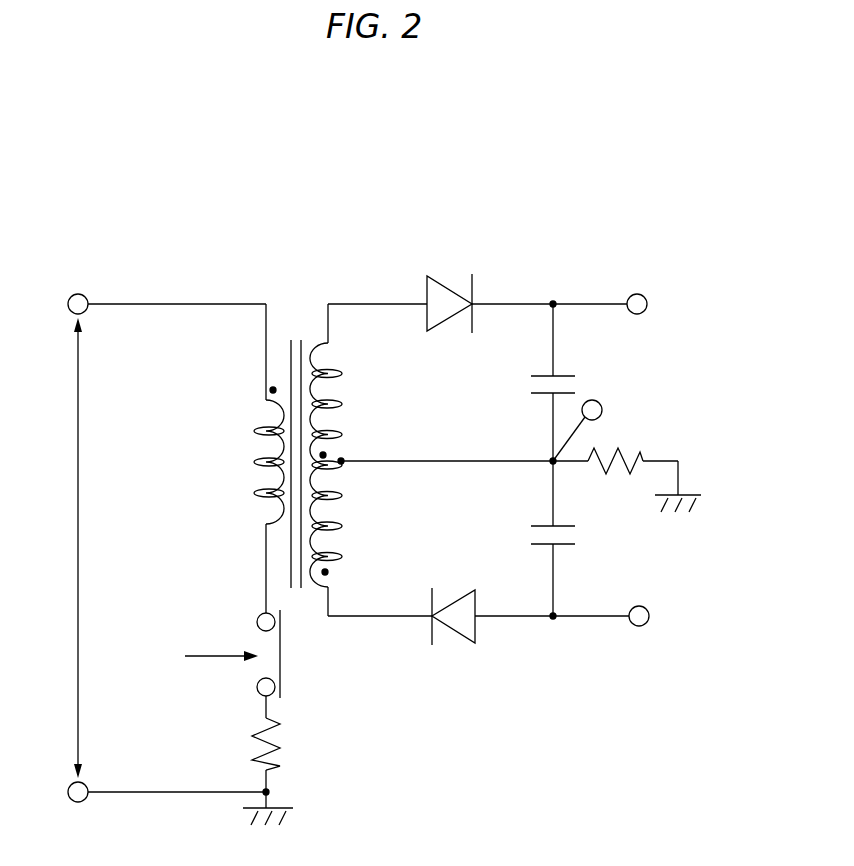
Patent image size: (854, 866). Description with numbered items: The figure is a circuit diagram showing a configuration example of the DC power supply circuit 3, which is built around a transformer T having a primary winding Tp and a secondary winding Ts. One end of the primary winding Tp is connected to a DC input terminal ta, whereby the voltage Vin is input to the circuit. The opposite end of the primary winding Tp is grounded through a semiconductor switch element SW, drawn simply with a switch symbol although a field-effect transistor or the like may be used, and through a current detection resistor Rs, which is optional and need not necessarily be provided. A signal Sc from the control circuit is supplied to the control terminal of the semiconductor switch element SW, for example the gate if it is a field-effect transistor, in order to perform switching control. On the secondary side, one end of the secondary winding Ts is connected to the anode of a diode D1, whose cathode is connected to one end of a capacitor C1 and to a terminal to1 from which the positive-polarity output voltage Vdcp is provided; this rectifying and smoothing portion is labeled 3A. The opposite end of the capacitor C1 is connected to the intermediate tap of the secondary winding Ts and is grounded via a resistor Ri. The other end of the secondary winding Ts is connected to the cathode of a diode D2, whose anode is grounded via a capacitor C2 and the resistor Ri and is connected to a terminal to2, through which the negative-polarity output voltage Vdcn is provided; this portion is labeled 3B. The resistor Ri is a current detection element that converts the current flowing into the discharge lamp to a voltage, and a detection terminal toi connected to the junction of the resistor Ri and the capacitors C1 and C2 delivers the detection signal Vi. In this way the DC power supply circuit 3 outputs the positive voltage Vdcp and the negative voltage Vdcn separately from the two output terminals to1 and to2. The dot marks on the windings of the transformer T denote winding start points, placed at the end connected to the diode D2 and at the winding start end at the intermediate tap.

The DC power supply circuit 3 is at (631, 158).
The first rectifying/smoothing section 3A is at (454, 405).
The second rectifying/smoothing section 3B is at (454, 517).
The transformer T is at (333, 251).
The primary winding Tp is at (284, 399).
The secondary winding Ts is at (311, 342).
The DC input terminal ta is at (78, 295).
The input voltage Vin is at (64, 560).
The diode D1 is at (452, 267).
The diode D2 is at (463, 594).
The capacitor C1 is at (543, 373).
The capacitor C2 is at (543, 524).
The detection terminal toi is at (596, 400).
The detection signal Vi is at (614, 415).
The resistor Ri is at (630, 456).
The terminal to1 is at (648, 304).
The terminal to2 is at (650, 616).
The output voltage Vdcp is at (662, 274).
The output voltage Vdcn is at (668, 643).
The semiconductor switch element SW is at (238, 655).
The signal Sc is at (207, 657).
The current detection resistor Rs is at (282, 757).